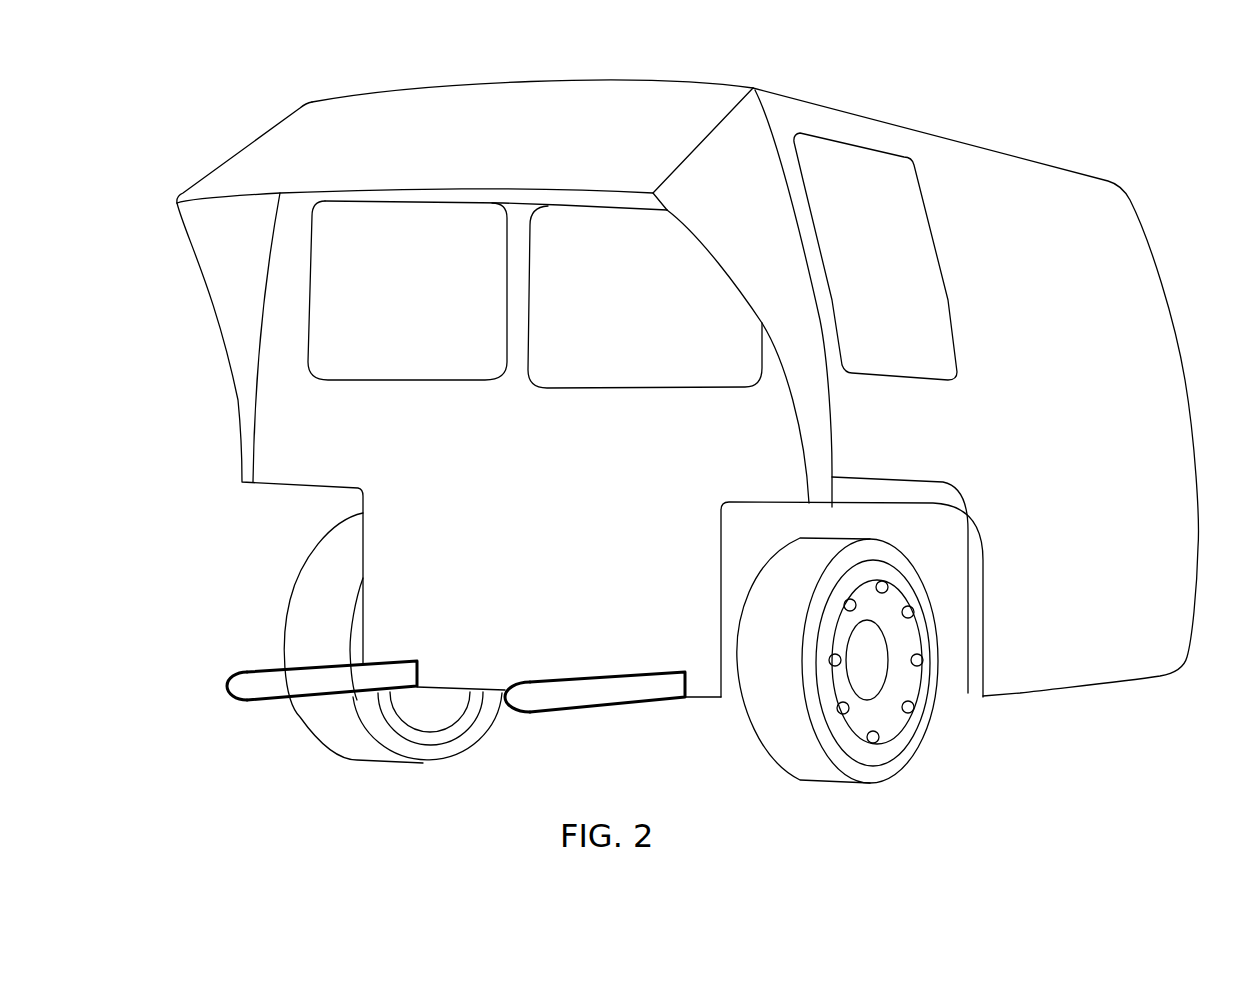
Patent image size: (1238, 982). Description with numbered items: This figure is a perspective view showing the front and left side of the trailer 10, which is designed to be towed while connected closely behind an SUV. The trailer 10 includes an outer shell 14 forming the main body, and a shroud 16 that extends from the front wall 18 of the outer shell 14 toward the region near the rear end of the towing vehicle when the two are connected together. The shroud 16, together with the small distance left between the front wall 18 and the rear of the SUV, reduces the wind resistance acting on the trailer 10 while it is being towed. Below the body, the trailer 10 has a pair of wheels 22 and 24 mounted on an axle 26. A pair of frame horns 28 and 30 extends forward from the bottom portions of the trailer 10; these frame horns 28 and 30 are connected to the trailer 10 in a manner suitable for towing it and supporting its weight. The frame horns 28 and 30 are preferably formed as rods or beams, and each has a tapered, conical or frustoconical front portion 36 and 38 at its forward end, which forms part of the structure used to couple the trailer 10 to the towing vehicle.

The trailer 10 is at (1020, 695).
The outer shell 14 is at (846, 110).
The shroud 16 is at (260, 133).
The front wall 18 is at (558, 498).
The wheel 22 is at (803, 760).
The wheel 24 is at (287, 602).
The axle 26 is at (880, 673).
The frame horn 28 is at (622, 705).
The frame horn 30 is at (270, 700).
The front portion 36 is at (523, 715).
The front portion 38 is at (233, 700).